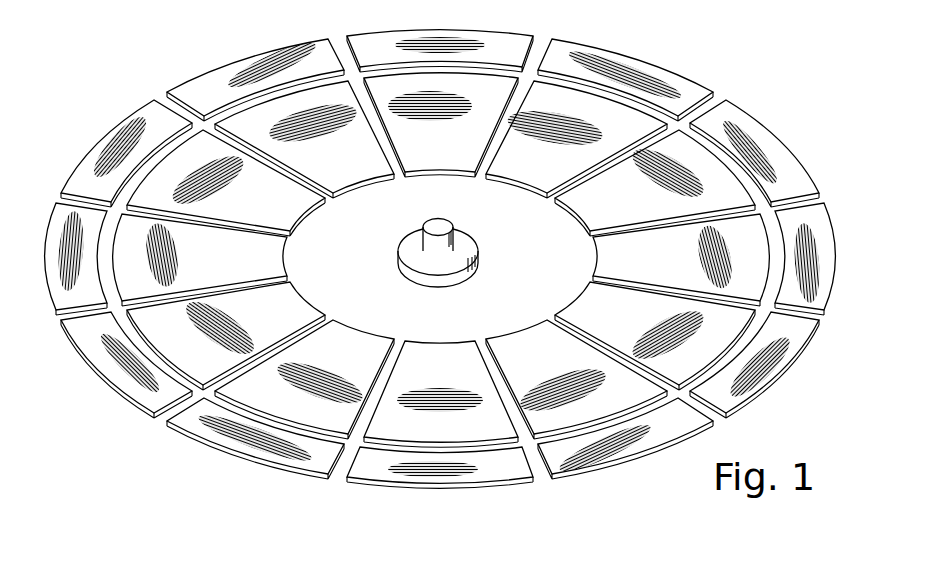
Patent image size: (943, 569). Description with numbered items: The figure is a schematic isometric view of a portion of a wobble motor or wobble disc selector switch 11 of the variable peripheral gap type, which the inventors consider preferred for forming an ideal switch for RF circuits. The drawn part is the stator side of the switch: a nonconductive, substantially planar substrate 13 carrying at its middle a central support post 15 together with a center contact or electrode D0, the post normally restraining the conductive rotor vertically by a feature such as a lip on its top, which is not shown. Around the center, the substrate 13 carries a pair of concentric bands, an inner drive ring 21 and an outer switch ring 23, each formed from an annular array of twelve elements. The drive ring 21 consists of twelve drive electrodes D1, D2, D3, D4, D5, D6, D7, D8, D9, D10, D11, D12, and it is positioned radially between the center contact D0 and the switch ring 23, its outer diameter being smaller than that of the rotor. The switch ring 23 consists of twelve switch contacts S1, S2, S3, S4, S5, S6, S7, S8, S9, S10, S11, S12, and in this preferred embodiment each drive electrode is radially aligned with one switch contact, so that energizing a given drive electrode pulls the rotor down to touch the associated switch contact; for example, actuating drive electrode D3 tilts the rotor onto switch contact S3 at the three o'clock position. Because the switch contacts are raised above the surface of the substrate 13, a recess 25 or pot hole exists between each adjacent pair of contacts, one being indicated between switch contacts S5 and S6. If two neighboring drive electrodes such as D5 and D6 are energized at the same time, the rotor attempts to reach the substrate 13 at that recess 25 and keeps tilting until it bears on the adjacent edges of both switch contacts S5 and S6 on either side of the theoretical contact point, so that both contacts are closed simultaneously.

The wobble disc selector switch 11 is at (703, 48).
The substrate 13 is at (407, 303).
The central support post 15 is at (465, 228).
The drive ring 21 is at (245, 122).
The switch ring 23 is at (790, 185).
The recess 25 is at (533, 477).
The center contact D0 is at (481, 259).
The drive electrode D1 is at (576, 139).
The drive electrode D2 is at (655, 183).
The drive electrode D3 is at (681, 260).
The drive electrode D4 is at (655, 336).
The drive electrode D5 is at (576, 379).
The drive electrode D6 is at (441, 394).
The drive electrode D7 is at (304, 379).
The drive electrode D8 is at (226, 336).
The drive electrode D9 is at (200, 260).
The drive electrode D10 is at (226, 183).
The drive electrode D11 is at (304, 139).
The drive electrode D12 is at (441, 125).
The switch contact S1 is at (625, 75).
The switch contact S2 is at (754, 153).
The switch contact S3 is at (823, 259).
The switch contact S4 is at (754, 365).
The switch contact S5 is at (625, 443).
The switch contact S6 is at (440, 482).
The switch contact S7 is at (255, 443).
The switch contact S8 is at (126, 365).
The switch contact S9 is at (58, 259).
The switch contact S10 is at (126, 153).
The switch contact S11 is at (255, 75).
The switch contact S12 is at (440, 37).